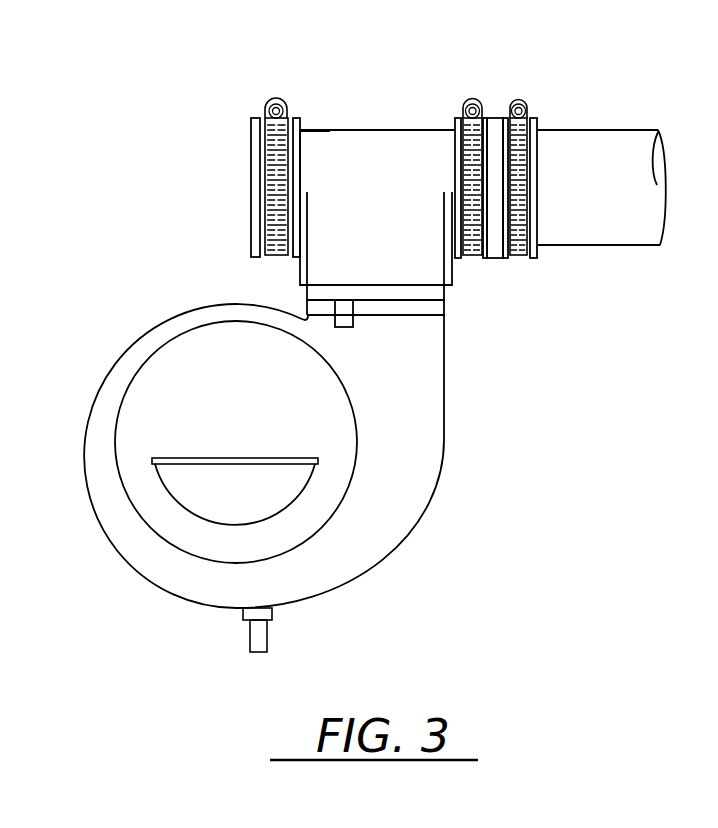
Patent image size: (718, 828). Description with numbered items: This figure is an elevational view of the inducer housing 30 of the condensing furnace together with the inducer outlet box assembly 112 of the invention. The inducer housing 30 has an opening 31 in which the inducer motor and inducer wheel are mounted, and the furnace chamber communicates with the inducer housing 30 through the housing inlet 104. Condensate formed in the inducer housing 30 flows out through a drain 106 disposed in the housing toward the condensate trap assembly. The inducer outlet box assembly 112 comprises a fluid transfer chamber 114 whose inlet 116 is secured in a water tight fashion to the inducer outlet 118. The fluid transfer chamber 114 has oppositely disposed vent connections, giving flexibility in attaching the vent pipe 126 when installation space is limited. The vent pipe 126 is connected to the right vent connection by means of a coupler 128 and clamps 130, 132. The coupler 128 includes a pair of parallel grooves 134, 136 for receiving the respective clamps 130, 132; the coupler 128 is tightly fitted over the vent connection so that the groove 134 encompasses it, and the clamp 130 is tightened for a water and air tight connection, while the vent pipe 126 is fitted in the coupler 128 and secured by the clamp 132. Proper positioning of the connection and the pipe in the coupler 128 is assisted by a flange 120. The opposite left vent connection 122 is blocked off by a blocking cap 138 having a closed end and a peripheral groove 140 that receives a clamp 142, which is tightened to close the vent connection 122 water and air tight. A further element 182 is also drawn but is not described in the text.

The inducer housing 30 is at (352, 560).
The opening 31 is at (356, 452).
The housing inlet 104 is at (297, 463).
The drain 106 is at (250, 628).
The inducer outlet box assembly 112 is at (214, 184).
The fluid transfer chamber 114 is at (360, 116).
The inlet 116 is at (445, 306).
The inducer outlet 118 is at (422, 328).
The flange 120 is at (497, 117).
The left vent connection 122 is at (317, 118).
The vent pipe 126 is at (630, 247).
The coupler 128 is at (504, 304).
The clamp 130 is at (470, 177).
The clamp 132 is at (520, 160).
The groove 134 is at (465, 190).
The groove 136 is at (528, 198).
The blocking cap 138 is at (252, 158).
The groove 140 is at (265, 186).
The clamp 142 is at (278, 233).
The stud 182 is at (350, 330).